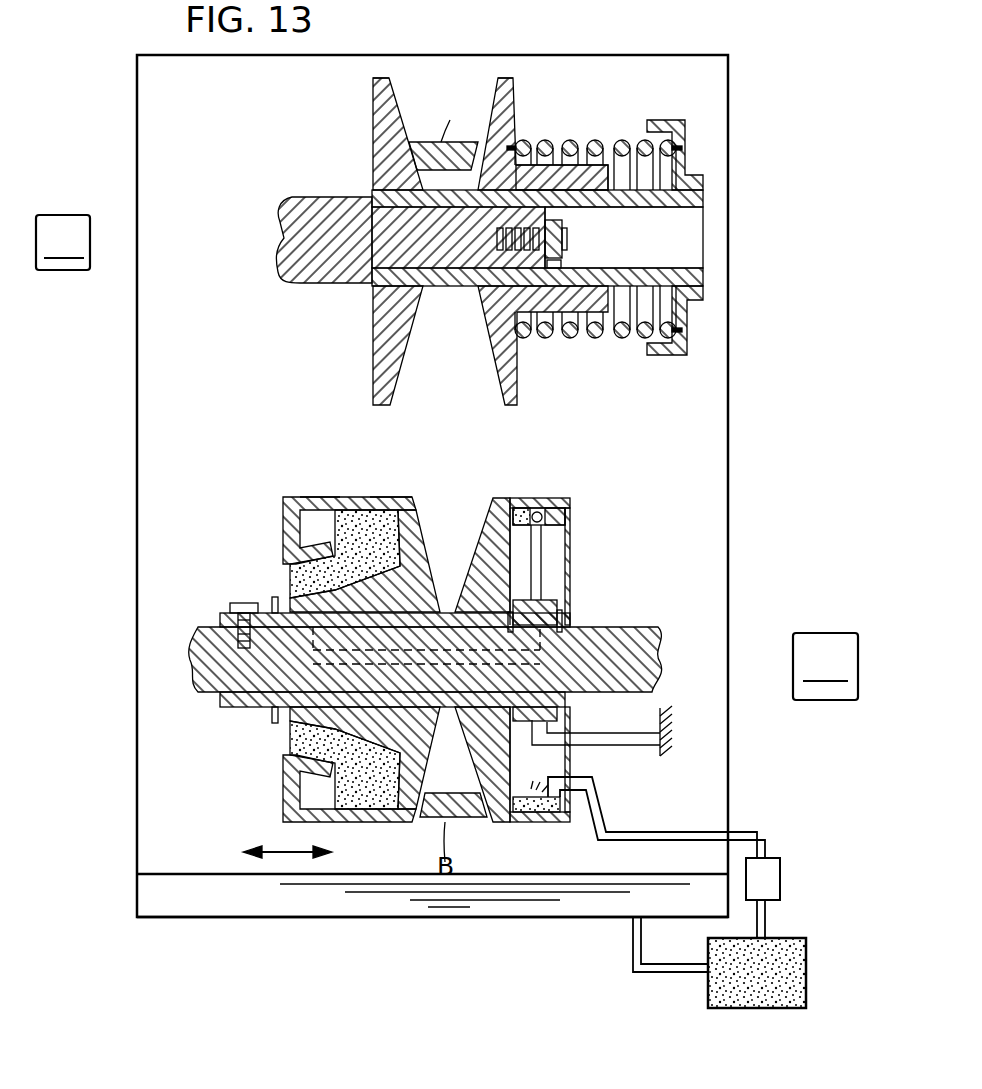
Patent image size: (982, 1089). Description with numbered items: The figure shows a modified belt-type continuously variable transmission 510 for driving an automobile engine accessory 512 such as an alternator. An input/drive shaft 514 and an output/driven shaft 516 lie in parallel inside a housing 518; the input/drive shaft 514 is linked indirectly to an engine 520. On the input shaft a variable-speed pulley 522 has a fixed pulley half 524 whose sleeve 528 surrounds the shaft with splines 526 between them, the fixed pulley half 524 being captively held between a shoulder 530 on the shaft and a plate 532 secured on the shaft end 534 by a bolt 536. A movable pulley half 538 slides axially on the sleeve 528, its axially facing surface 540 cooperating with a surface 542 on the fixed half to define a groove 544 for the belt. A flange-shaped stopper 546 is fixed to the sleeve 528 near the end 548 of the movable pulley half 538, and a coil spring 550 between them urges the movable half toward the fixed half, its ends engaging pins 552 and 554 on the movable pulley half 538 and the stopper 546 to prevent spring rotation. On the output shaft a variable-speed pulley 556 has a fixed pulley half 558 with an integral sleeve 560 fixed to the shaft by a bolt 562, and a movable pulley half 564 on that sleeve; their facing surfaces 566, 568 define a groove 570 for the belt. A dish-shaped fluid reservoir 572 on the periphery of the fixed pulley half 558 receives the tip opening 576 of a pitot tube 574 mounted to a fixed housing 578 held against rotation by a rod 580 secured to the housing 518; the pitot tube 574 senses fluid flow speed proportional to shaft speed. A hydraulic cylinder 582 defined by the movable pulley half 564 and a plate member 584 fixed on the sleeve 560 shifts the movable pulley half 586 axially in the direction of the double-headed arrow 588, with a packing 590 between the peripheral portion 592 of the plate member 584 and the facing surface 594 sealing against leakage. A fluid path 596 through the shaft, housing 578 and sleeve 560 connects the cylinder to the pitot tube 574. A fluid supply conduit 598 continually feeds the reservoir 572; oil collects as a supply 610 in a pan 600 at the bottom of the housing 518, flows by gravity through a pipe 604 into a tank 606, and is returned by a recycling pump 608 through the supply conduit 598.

The belt-type continuously variable transmission 510 is at (536, 228).
The accessory 512 is at (660, 660).
The input/drive shaft 514 is at (703, 195).
The output/driven shaft 516 is at (660, 630).
The housing 518 is at (728, 515).
The engine 520 is at (272, 240).
The variable-speed pulley 522 is at (456, 241).
The fixed pulley half 524 is at (380, 132).
The splines 526 is at (374, 205).
The sleeve 528 is at (590, 165).
The shoulder 530 is at (375, 310).
The plate 532 is at (561, 270).
The shaft end 534 is at (560, 178).
The bolt 536 is at (567, 238).
The movable pulley half 538 is at (520, 225).
The axially facing surface 540 is at (510, 76).
The surface 542 is at (398, 78).
The groove 544 is at (447, 360).
The stopper 546 is at (687, 125).
The end 548 is at (620, 315).
The coil spring 550 is at (598, 140).
The pin 552 is at (515, 145).
The pin 554 is at (688, 330).
The variable-speed pulley 556 is at (577, 665).
The fixed pulley half 558 is at (552, 490).
The sleeve 560 is at (245, 710).
The bolt 562 is at (242, 603).
The movable pulley half 564 is at (418, 505).
The facing surface 566 is at (478, 800).
The facing surface 568 is at (427, 808).
The groove 570 is at (449, 528).
The fluid reservoir 572 is at (548, 812).
The pitot tube 574 is at (545, 592).
The tip opening 576 is at (560, 504).
The housing 578 is at (560, 612).
The rod 580 is at (635, 745).
The hydraulic cylinder 582 is at (358, 512).
The plate member 584 is at (296, 497).
The movable pulley half 586 is at (290, 770).
The double-headed arrow 588 is at (275, 852).
The packing 590 is at (322, 497).
The peripheral portion 592 is at (285, 815).
The facing surface 594 is at (388, 497).
The fluid path 596 is at (215, 700).
The fluid supply conduit 598 is at (762, 830).
The pan 600 is at (372, 917).
The pipe 604 is at (633, 955).
The tank 606 is at (806, 953).
The recycling pump 608 is at (765, 880).
The supply 610 is at (690, 911).